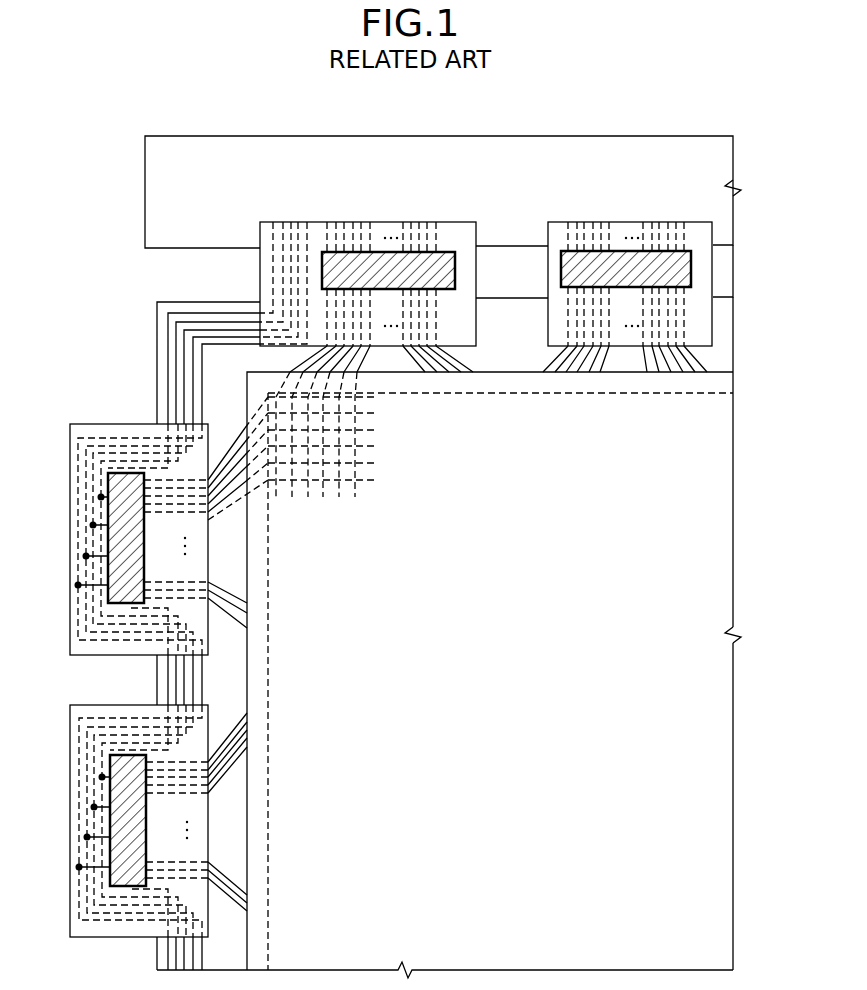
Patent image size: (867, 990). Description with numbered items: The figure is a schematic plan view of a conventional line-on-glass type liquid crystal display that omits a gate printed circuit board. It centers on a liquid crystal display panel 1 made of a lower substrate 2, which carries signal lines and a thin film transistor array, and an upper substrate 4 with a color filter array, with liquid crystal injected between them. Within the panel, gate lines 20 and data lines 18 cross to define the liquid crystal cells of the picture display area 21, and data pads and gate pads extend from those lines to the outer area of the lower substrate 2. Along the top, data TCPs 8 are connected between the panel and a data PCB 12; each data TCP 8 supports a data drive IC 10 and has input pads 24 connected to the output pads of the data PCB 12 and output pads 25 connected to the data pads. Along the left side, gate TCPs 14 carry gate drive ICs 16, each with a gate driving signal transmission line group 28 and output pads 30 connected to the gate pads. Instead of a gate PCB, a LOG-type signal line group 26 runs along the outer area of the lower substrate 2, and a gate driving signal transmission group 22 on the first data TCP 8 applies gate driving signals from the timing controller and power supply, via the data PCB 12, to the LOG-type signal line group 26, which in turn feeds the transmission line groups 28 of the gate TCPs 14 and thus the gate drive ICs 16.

The liquid crystal display panel 1 is at (735, 535).
The lower substrate 2 is at (733, 330).
The upper substrate 4 is at (733, 385).
The data TCP 8 is at (713, 288).
The data drive IC 10 is at (713, 258).
The data PCB 12 is at (734, 166).
The gate TCP 14 is at (70, 543).
The gate drive IC 16 is at (93, 525).
The data lines 18 is at (323, 495).
The gate lines 20 is at (375, 447).
The picture display area 21 is at (562, 670).
The gate driving signal transmission group 22 is at (270, 263).
The input pads 24 is at (420, 246).
The output pads 25 is at (445, 329).
The LOG-type signal line group 26 is at (160, 333).
The gate driving signal transmission line group 28 is at (77, 487).
The output pads 30 is at (209, 486).